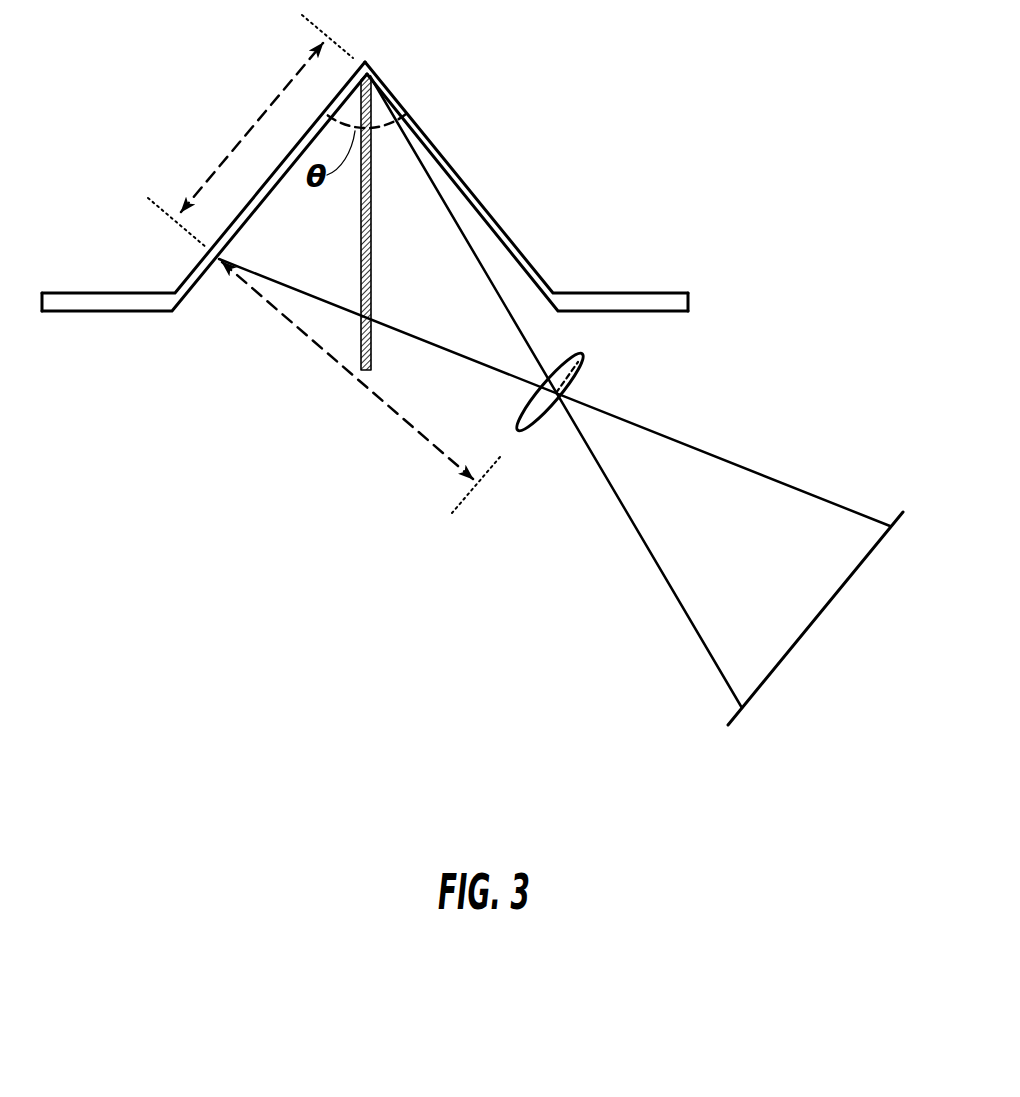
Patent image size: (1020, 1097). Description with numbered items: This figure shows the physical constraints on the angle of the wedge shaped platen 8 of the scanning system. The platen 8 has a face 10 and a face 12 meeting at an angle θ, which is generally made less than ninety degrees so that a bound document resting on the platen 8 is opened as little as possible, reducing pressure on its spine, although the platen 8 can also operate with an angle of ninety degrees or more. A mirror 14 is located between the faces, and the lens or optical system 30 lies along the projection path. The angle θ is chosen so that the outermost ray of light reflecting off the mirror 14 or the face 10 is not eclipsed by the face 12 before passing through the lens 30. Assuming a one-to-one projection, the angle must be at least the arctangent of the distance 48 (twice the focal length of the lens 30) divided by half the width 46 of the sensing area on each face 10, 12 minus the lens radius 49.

The wedge shaped platen 8 is at (365, 214).
The face 10 is at (193, 270).
The face 12 is at (530, 257).
The mirror 14 is at (373, 256).
The lens 30 is at (543, 421).
The width L of sensing area 46 is at (226, 162).
The distance 2f 48 is at (378, 398).
The radius r of lens 49 is at (577, 378).